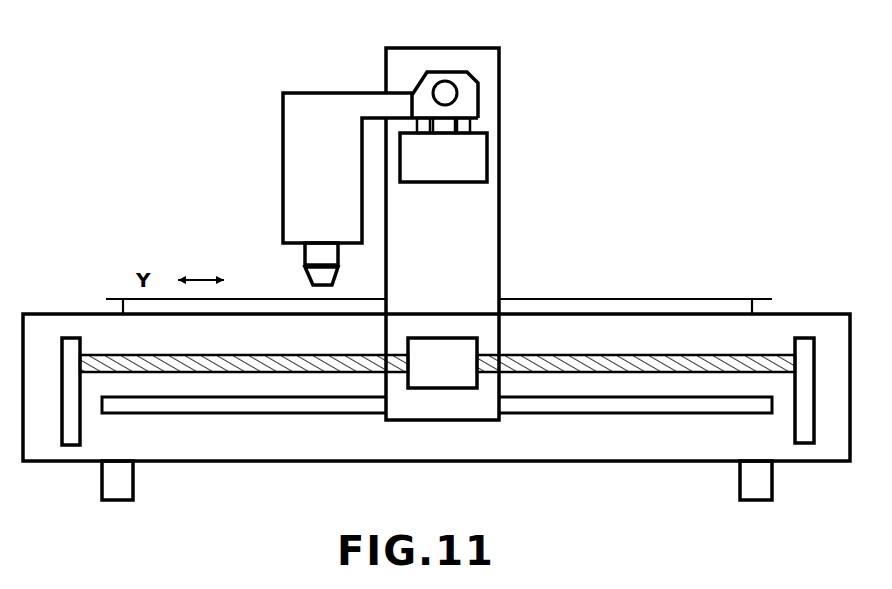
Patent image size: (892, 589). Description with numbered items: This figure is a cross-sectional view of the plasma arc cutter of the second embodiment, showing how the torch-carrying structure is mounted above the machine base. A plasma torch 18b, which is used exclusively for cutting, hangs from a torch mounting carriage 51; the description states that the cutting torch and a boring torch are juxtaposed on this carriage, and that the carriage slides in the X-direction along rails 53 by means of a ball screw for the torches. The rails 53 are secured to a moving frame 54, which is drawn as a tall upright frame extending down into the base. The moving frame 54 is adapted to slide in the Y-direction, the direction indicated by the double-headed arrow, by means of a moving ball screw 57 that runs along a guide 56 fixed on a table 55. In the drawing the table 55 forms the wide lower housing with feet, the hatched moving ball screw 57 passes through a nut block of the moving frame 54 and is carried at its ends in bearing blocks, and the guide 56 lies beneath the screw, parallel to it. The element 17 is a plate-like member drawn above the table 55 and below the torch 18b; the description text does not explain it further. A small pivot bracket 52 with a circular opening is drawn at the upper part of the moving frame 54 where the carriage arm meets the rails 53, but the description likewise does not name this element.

The table plate 17 is at (624, 299).
The plasma torch 18b is at (317, 252).
The torch mounting carriage 51 is at (302, 103).
The bracket 52 is at (445, 93).
The rails 53 is at (463, 128).
The moving frame 54 is at (498, 78).
The table 55 is at (280, 440).
The guide 56 is at (558, 405).
The moving ball screw 57 is at (657, 372).